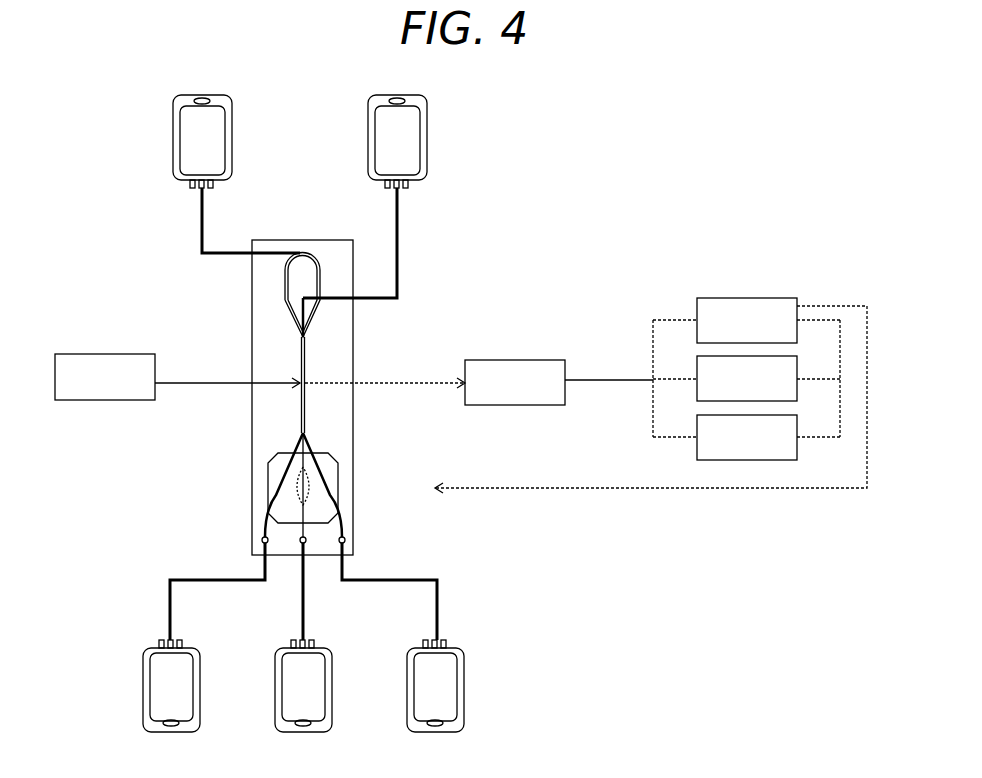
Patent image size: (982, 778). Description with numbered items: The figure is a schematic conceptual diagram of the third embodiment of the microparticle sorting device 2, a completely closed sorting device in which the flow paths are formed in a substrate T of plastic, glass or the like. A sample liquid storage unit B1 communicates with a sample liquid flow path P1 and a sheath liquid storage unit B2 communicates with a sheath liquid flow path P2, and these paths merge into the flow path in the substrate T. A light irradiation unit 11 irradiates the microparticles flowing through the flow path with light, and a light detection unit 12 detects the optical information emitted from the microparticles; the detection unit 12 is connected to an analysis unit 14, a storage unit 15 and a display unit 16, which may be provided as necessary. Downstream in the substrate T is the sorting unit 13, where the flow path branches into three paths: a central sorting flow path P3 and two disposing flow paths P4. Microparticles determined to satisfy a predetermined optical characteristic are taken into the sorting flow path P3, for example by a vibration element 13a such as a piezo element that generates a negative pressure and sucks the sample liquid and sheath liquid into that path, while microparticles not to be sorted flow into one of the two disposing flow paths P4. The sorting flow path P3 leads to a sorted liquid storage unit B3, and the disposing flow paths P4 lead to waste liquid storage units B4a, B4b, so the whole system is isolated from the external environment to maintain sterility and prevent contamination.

The microparticle sorting device 2 is at (789, 145).
The light irradiation unit 11 is at (177, 377).
The light detection unit 12 is at (559, 382).
The sorting unit 13 is at (372, 435).
The vibration element 13a is at (290, 528).
The analysis unit 14 is at (747, 320).
The storage unit 15 is at (747, 378).
The display unit 16 is at (747, 437).
The substrate T is at (287, 238).
The sample liquid flow path P1 is at (308, 316).
The sheath liquid flow path P2 is at (321, 275).
The sorting flow path P3 is at (309, 544).
The disposing flow path P4 is at (258, 527).
The sample liquid storage unit B1 is at (365, 196).
The sheath liquid storage unit B2 is at (236, 174).
The sorted liquid storage unit B3 is at (303, 686).
The waste liquid storage unit B4a is at (435, 686).
The waste liquid storage unit B4b is at (171, 686).